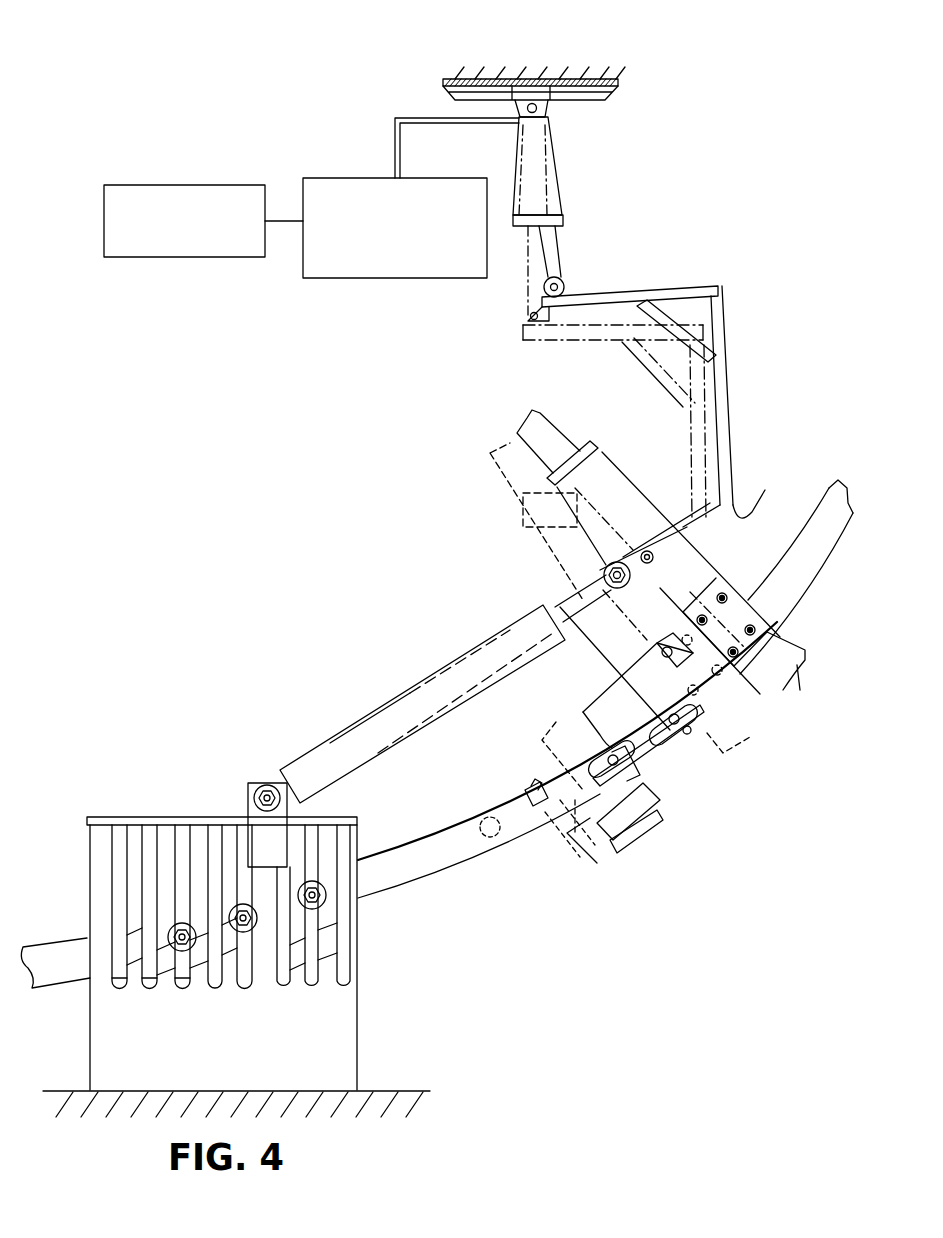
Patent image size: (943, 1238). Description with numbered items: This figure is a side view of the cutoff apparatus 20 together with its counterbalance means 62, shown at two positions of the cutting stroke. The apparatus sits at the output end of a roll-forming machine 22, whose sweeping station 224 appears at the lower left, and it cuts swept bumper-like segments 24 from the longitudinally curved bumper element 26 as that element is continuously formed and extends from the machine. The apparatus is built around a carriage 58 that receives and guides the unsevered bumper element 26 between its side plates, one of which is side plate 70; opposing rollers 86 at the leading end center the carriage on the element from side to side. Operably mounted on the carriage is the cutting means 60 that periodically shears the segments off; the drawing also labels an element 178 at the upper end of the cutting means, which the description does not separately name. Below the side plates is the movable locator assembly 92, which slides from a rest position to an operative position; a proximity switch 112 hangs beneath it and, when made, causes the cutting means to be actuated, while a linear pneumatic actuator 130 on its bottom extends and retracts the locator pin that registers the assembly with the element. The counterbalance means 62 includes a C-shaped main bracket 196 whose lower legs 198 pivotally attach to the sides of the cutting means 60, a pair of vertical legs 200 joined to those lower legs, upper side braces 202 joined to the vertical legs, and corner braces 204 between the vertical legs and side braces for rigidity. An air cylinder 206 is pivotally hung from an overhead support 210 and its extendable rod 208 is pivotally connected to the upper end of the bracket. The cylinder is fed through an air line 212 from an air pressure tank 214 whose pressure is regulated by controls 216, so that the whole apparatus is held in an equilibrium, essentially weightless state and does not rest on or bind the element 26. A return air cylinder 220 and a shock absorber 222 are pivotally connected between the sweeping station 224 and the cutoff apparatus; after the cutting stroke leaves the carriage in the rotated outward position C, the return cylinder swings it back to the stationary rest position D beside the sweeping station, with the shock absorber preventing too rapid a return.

The cutoff apparatus 20 is at (430, 470).
The roll-forming machine 22 is at (102, 816).
The segment 24 is at (813, 585).
The bumper element 26 is at (427, 878).
The carriage 58 is at (580, 712).
The cutting means 60 is at (625, 470).
The counterbalance means 62 is at (465, 303).
The side plate 70 is at (632, 711).
The opposing rollers 86 is at (525, 798).
The locator assembly 92 is at (667, 760).
The proximity switch 112 is at (690, 736).
The linear pneumatic actuator 130 is at (637, 830).
The piston rod 178 is at (553, 423).
The C-shaped main bracket 196 is at (667, 285).
The lower legs 198 is at (748, 515).
The vertical legs 200 is at (728, 387).
The upper side braces 202 is at (588, 292).
The corner braces 204 is at (677, 315).
The air cylinder 206 is at (553, 163).
The extendable rod 208 is at (557, 248).
The overhead support 210 is at (567, 78).
The air line 212 is at (414, 115).
The air pressure tank 214 is at (310, 177).
The controls 216 is at (150, 185).
The return air cylinders 220 is at (393, 698).
The shock absorbers 222 is at (433, 670).
The sweeping station 224 is at (167, 817).
The position C is at (800, 690).
The rest position D is at (735, 740).